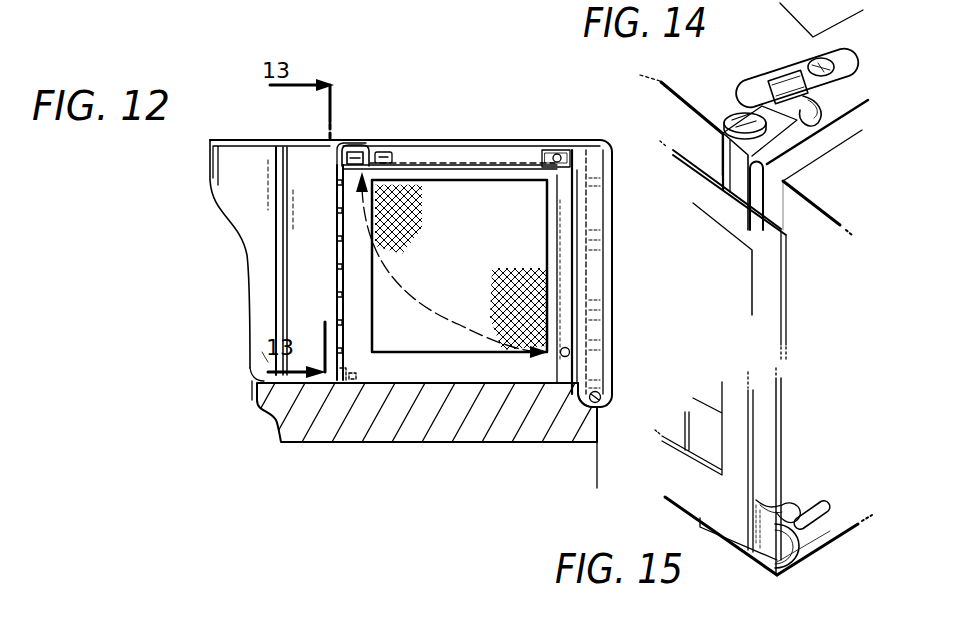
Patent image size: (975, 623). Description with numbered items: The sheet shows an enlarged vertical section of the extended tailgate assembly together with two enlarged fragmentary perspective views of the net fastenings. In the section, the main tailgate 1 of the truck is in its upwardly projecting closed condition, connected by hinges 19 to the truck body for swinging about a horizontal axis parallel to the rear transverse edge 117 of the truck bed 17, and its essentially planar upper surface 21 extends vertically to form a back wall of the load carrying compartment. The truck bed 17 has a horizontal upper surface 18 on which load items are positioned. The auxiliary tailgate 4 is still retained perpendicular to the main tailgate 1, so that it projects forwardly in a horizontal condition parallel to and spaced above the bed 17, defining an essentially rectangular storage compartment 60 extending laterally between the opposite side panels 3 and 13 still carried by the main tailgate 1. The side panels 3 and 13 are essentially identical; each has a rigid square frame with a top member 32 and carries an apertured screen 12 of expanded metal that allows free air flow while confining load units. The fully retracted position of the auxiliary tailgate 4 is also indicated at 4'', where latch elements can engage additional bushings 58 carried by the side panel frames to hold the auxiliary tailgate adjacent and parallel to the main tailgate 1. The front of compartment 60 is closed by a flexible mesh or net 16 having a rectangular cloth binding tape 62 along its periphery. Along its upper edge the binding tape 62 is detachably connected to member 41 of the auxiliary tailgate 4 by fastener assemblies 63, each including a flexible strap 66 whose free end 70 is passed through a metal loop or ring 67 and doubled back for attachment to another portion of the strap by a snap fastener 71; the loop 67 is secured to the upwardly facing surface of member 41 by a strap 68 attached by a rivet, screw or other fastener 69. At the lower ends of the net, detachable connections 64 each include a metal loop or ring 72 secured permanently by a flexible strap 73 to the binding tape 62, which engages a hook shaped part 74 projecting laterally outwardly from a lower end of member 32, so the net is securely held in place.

In FIG. 12, the main tailgate 1 is at (614, 235).
In FIG. 14, the right extended side support or panel 3 is at (822, 197).
In FIG. 15, the right extended side support or panel 3 is at (840, 453).
In FIG. 12, the extended or auxiliary tailgate 4 is at (471, 114).
In FIG. 12, the fully retracted position of auxiliary tailgate 4'' is at (607, 280).
In FIG. 12, the apertured screen 12 is at (466, 267).
In FIG. 12, the left extended side support or panel 13 is at (520, 178).
In FIG. 12, the mesh or net 16 is at (326, 271).
In FIG. 14, the mesh or net 16 is at (758, 259).
In FIG. 12, the truck bed 17 is at (258, 344).
In FIG. 12, the horizontal upper surface of truck bed 18 is at (250, 370).
In FIG. 12, the hinges 19 is at (604, 408).
In FIG. 12, the upper surface of main tailgate 21 is at (572, 212).
In FIG. 12, the top frame member 32 is at (441, 150).
In FIG. 12, the frame of auxiliary tailgate 41 is at (350, 170).
In FIG. 14, the frame of auxiliary tailgate 41 is at (636, 82).
In FIG. 12, the additional bushings 58 is at (571, 352).
In FIG. 12, the storage compartment 60 is at (417, 152).
In FIG. 12, the binding tape 62 is at (346, 163).
In FIG. 14, the binding tape 62 is at (736, 225).
In FIG. 15, the binding tape 62 is at (742, 439).
In FIG. 12, the fastener assemblies 63 is at (339, 128).
In FIG. 14, the fastener assemblies 63 is at (714, 153).
In FIG. 15, the fastener assemblies 64 is at (825, 535).
In FIG. 14, the flexible strap 66 is at (741, 178).
In FIG. 14, the metal loop or ring 67 is at (818, 121).
In FIG. 12, the strap 68 is at (358, 142).
In FIG. 14, the strap 68 is at (786, 78).
In FIG. 14, the fastener 69 is at (834, 60).
In FIG. 14, the free end of strap 70 is at (718, 131).
In FIG. 14, the snap fastener 71 is at (736, 116).
In FIG. 15, the metal loop or ring 72 is at (794, 510).
In FIG. 15, the flexible strap 73 is at (766, 530).
In FIG. 15, the hook shaped part 74 is at (822, 511).
In FIG. 12, the rear transverse edge of truck bed 117 is at (599, 392).